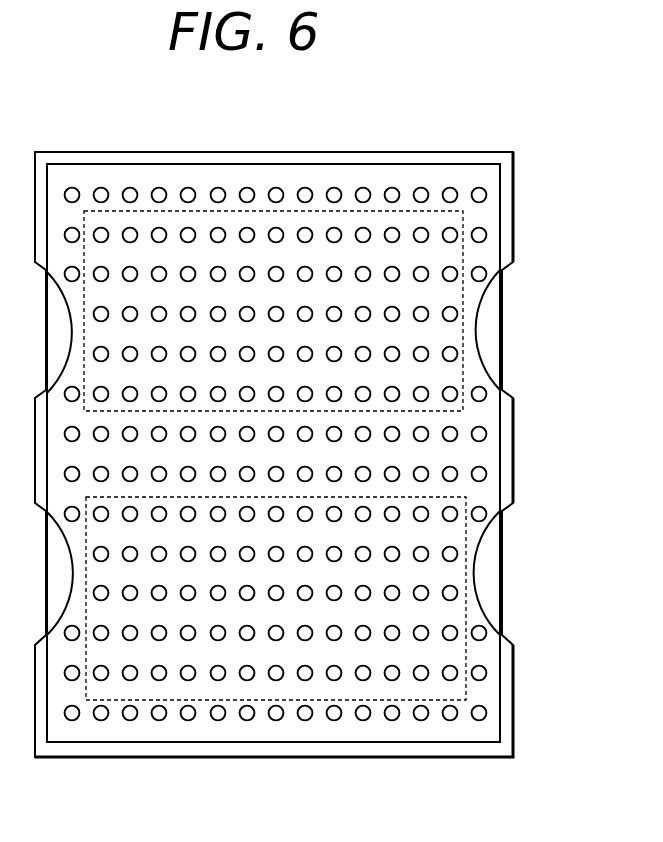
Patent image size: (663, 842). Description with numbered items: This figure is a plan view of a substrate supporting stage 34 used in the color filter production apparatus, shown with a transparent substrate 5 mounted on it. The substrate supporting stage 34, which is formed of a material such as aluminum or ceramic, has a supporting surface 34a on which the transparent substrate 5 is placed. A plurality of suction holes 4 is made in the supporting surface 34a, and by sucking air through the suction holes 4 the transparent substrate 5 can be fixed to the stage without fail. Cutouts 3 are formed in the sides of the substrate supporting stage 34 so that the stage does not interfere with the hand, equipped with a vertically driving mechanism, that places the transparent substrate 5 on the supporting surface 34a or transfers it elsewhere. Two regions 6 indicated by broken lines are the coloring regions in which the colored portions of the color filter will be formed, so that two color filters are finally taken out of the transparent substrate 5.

The cutouts 3 is at (506, 273).
The suction holes 4 is at (479, 232).
The transparent substrate 5 is at (500, 201).
The coloring regions 6 is at (316, 211).
The substrate supporting stage 34 is at (487, 150).
The supporting surface 34a is at (415, 158).